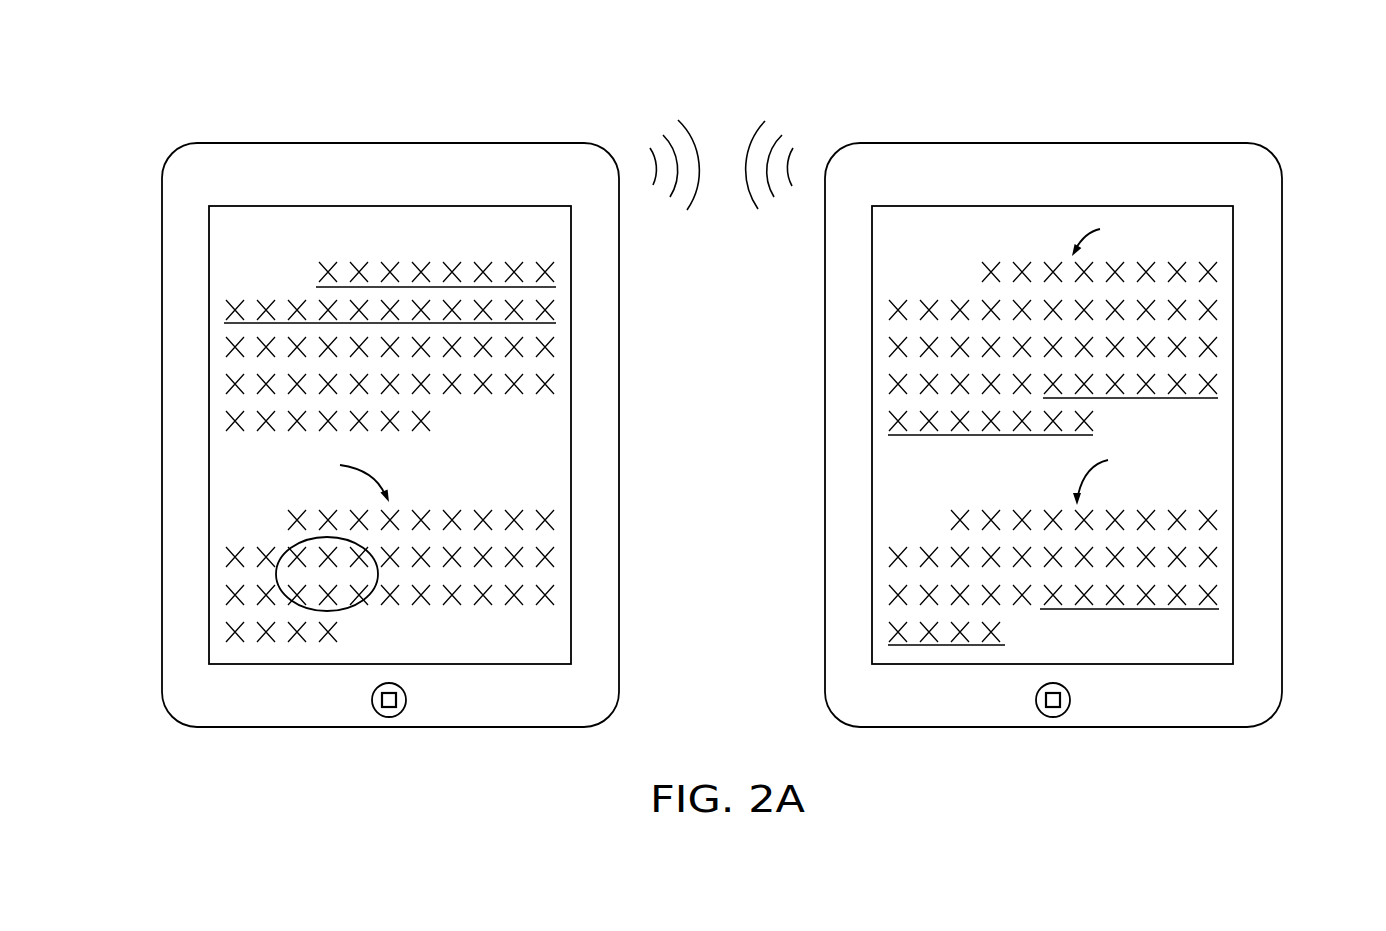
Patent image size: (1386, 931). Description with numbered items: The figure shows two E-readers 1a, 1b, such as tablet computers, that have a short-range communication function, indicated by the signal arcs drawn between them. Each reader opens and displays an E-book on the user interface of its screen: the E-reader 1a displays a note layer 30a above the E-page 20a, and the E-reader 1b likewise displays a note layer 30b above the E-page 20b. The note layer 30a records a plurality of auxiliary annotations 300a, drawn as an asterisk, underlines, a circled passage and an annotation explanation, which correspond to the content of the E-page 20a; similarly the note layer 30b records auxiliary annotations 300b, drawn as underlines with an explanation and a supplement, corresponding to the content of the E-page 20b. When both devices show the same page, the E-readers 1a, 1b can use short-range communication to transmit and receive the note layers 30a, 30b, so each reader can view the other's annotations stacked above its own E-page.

The E-reader 1a is at (276, 142).
The E-reader 1b is at (926, 142).
The note layer 30a is at (243, 233).
The note layer 30b is at (905, 233).
The E-page 20a is at (250, 521).
The E-page 20b is at (912, 496).
The auxiliary annotations 300a is at (225, 336).
The auxiliary annotations 300b is at (1165, 216).